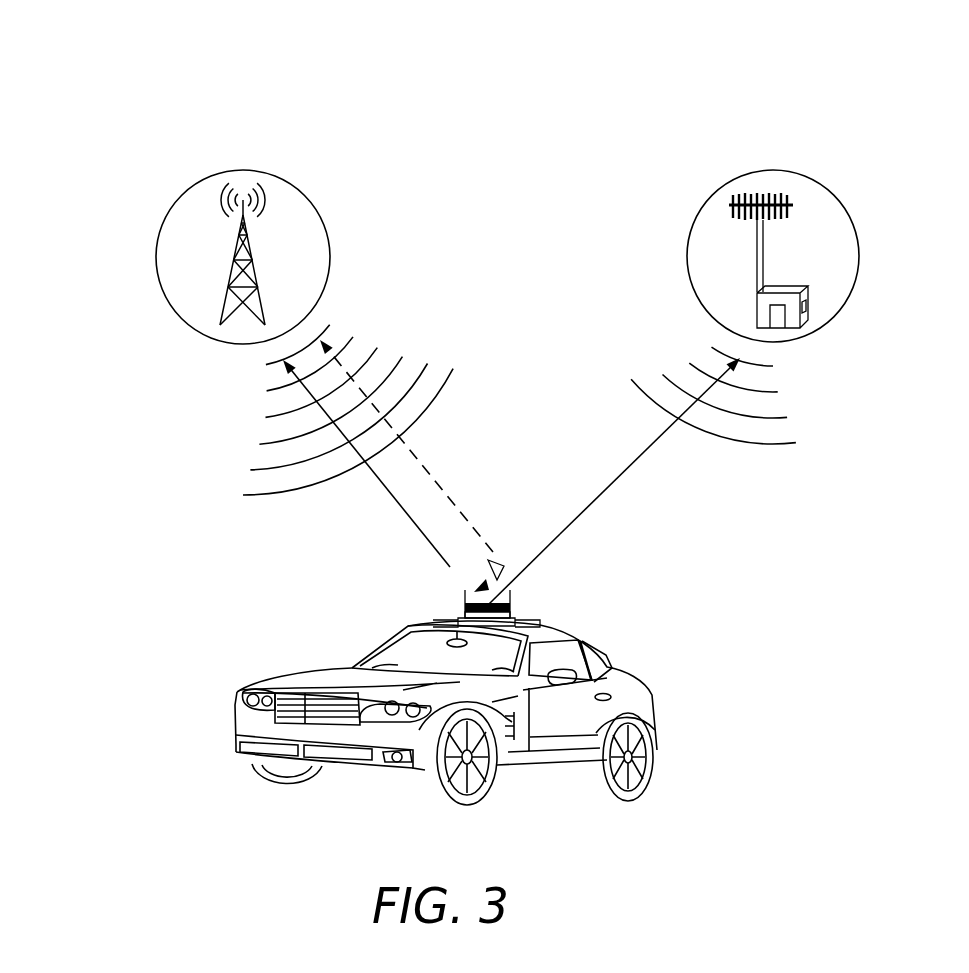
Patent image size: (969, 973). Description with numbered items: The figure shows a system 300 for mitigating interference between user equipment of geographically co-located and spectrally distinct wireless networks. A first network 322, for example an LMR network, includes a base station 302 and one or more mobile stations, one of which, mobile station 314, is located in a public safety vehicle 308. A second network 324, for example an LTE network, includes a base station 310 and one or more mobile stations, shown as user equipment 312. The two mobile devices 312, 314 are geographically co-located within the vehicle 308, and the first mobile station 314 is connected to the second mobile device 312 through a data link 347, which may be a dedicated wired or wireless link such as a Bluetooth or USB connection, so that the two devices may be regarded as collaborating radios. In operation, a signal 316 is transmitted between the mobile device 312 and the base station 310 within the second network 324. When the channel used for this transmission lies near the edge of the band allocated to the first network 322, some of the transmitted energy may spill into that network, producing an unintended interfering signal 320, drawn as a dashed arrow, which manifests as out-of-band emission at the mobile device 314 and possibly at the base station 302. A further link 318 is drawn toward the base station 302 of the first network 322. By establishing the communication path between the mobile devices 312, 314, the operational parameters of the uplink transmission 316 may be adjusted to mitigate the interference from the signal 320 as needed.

The system 300 is at (86, 58).
The base station 302 is at (318, 203).
The public safety vehicle 308 is at (287, 672).
The base station 310 is at (834, 190).
The mobile station (user equipment) 312 is at (510, 598).
The mobile station 314 is at (465, 597).
The signal (uplink transmission) 316 is at (630, 466).
The communication link to network tower 318 is at (389, 492).
The interfering signal 320 is at (445, 503).
The first network 322 is at (285, 138).
The second network 324 is at (726, 143).
The data link 347 is at (534, 561).